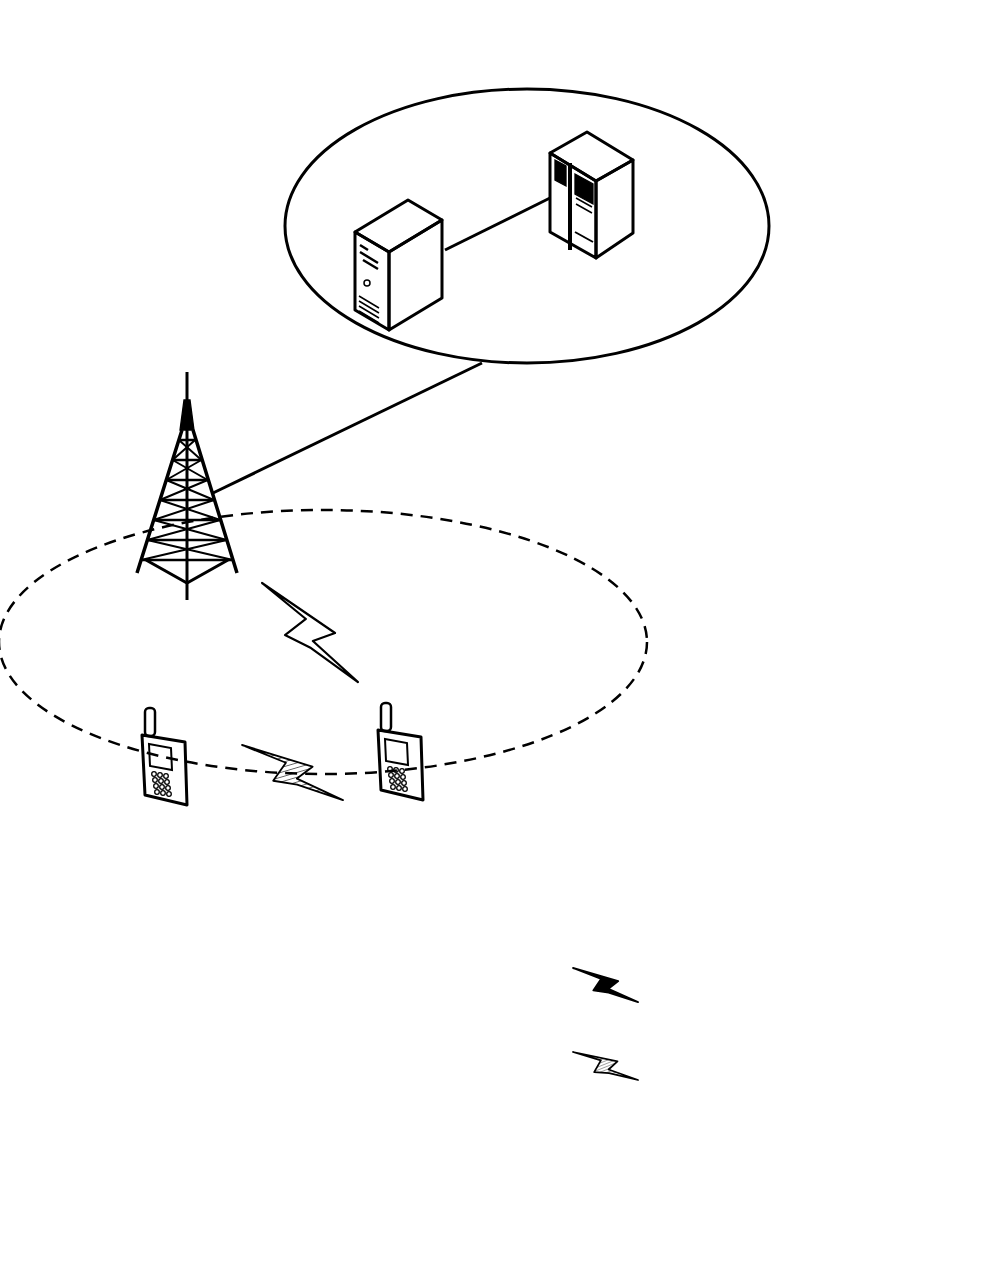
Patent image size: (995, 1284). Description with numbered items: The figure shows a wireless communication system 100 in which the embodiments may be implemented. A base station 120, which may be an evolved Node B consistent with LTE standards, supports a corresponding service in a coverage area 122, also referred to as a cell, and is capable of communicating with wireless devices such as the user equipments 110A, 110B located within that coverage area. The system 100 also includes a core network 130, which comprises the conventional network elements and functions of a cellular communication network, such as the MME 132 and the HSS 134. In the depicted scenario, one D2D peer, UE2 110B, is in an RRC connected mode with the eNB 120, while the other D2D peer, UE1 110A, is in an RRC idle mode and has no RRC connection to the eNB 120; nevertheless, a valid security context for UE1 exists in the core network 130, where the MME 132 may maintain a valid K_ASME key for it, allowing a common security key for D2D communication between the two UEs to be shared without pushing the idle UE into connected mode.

The wireless communication system 100 is at (63, 40).
The core network 130 is at (677, 123).
The MME (Mobility Management Entity) 132 is at (433, 302).
The HSS (Home Subscriber Server) 134 is at (618, 243).
The base station 120 is at (202, 434).
The coverage area 122 is at (560, 552).
The user equipment (UE1) 110A is at (140, 795).
The user equipment (UE2) 110B is at (392, 800).